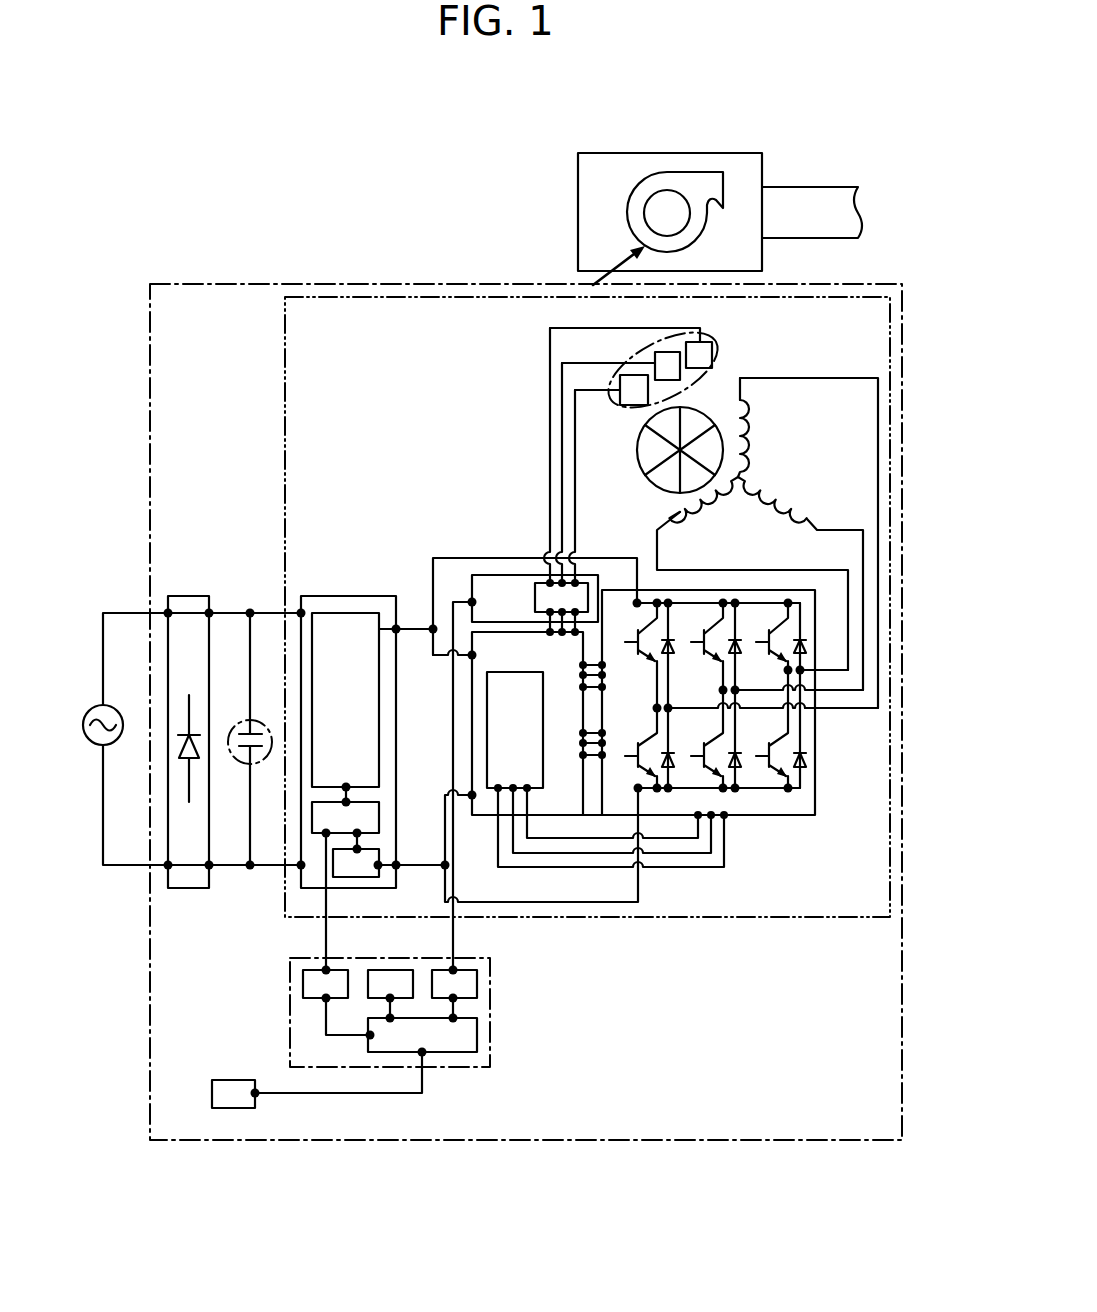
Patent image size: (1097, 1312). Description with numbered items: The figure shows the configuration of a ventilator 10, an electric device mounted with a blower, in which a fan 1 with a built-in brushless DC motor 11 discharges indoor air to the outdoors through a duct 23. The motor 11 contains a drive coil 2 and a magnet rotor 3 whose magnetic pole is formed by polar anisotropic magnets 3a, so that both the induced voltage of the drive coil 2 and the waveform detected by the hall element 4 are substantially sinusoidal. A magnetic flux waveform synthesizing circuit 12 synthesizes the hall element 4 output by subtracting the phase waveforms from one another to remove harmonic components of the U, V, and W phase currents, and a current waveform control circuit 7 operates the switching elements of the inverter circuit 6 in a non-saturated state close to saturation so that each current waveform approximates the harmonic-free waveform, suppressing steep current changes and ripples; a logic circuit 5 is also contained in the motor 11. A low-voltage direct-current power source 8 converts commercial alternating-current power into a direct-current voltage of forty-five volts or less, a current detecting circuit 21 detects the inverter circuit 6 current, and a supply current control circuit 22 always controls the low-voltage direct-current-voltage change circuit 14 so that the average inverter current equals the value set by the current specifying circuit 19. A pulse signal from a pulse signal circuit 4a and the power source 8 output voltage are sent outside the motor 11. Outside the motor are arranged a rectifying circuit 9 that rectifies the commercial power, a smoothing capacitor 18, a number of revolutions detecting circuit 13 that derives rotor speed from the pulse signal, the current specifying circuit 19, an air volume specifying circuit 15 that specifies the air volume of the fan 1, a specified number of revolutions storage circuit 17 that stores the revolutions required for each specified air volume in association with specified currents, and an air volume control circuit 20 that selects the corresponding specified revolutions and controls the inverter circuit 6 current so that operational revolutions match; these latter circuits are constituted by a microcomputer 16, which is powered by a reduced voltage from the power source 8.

The fan 1 is at (638, 222).
The ventilator 10 is at (588, 180).
The duct 23 is at (822, 203).
The brushless DC motor 11 is at (283, 372).
The drive coil 2 is at (720, 503).
The magnet rotor 3 is at (655, 466).
The polar anisotropic magnets 3a is at (647, 463).
The hall element 4 is at (715, 337).
The pulse signal circuit 4a is at (485, 575).
The magnetic flux waveform synthesizing circuit 12 is at (538, 582).
The logic circuit 5 is at (582, 793).
The inverter circuit 6 is at (817, 793).
The current waveform control circuit 7 is at (543, 765).
The low-voltage direct-current power source 8 is at (323, 596).
The rectifying circuit 9 is at (176, 596).
The smoothing capacitor 18 is at (238, 719).
The low-voltage direct-current-voltage change circuit 14 is at (347, 613).
The supply current control circuit 22 is at (320, 832).
The current detecting circuit 21 is at (380, 873).
The number of revolutions detecting circuit 13 is at (477, 993).
The specified number of revolutions storage circuit 17 is at (393, 970).
The current specifying circuit 19 is at (303, 983).
The air volume control circuit 20 is at (477, 1038).
The microcomputer 16 is at (477, 1070).
The air volume specifying circuit 15 is at (225, 1080).